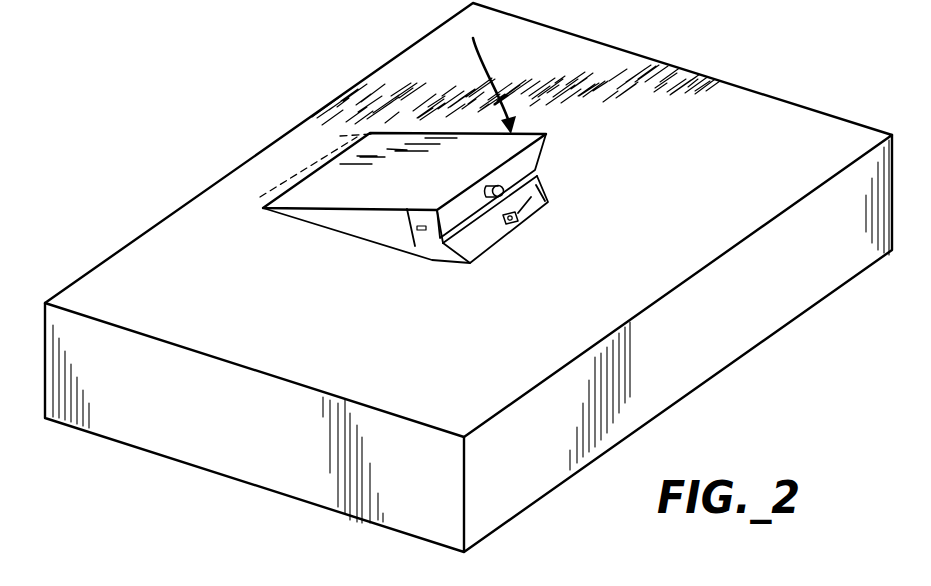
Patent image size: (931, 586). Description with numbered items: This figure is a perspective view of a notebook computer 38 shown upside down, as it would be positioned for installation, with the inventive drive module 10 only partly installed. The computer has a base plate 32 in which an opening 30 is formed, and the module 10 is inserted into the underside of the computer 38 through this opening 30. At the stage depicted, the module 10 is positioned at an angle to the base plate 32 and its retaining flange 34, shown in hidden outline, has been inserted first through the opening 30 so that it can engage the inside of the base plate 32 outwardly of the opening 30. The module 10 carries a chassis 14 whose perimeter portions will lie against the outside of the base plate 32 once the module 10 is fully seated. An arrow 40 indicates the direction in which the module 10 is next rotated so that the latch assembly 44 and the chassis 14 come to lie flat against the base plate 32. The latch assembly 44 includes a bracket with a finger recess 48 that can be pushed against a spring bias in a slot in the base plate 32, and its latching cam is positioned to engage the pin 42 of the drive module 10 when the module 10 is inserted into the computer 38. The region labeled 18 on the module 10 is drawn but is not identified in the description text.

The drive module 10 is at (542, 148).
The chassis 14 is at (477, 163).
The housing front wall 18 is at (370, 234).
The opening 30 is at (407, 252).
The base plate 32 is at (723, 181).
The retaining flange 34 is at (287, 172).
The notebook computer 38 is at (738, 78).
The arrow 40 is at (482, 50).
The pin 42 is at (506, 189).
The latch assembly 44 is at (463, 262).
The finger recess 48 is at (514, 222).